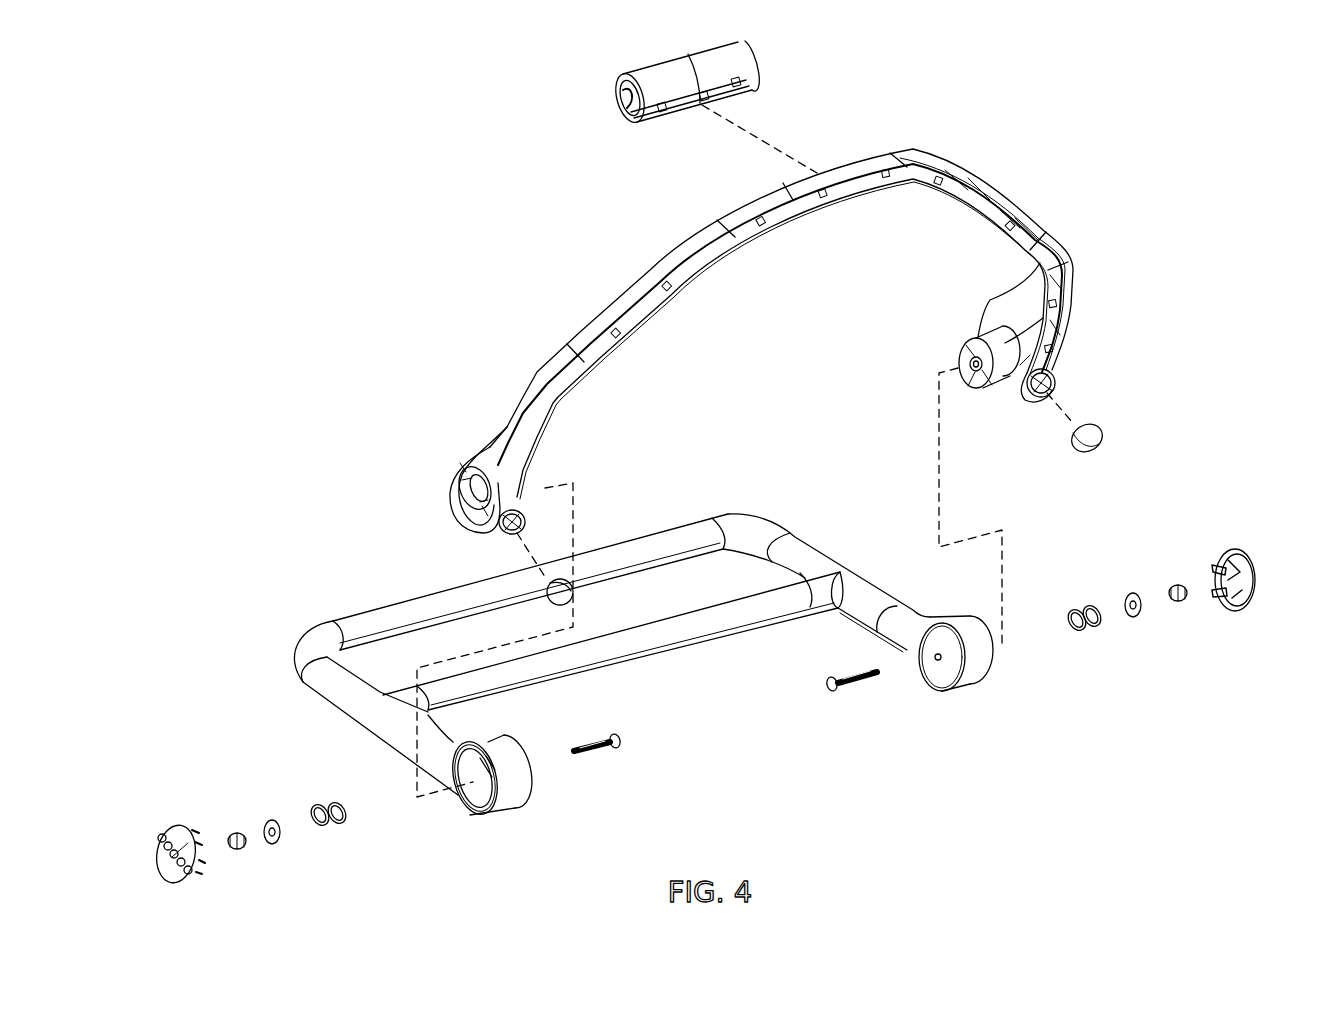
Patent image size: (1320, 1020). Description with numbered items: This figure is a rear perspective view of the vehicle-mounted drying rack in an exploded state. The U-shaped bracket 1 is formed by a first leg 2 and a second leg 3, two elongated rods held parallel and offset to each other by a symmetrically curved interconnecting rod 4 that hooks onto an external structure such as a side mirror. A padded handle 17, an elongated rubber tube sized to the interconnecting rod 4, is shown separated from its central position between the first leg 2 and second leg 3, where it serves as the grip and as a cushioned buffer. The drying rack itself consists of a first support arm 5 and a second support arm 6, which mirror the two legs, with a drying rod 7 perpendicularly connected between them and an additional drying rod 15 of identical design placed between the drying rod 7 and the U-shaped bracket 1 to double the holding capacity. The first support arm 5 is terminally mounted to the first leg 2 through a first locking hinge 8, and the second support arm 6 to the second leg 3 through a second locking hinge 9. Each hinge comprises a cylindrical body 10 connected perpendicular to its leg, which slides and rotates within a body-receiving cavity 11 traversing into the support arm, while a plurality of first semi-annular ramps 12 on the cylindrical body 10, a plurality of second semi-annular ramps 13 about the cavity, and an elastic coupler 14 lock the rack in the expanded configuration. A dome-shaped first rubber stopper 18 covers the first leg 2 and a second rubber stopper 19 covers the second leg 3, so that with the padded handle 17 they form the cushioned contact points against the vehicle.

The U-shaped bracket 1 is at (552, 286).
The first leg 2 is at (1030, 302).
The second leg 3 is at (497, 452).
The interconnecting rod 4 is at (706, 237).
The first support arm 5 is at (817, 562).
The second support arm 6 is at (352, 712).
The drying rod 7 is at (448, 598).
The first locking hinge 8 is at (916, 710).
The second locking hinge 9 is at (579, 797).
The cylindrical body 10 is at (1008, 385).
The body-receiving cavity 11 is at (476, 799).
The plurality of first semi-annular ramps 12 is at (975, 333).
The plurality of second semi-annular ramps 13 is at (487, 760).
The elastic coupler 14 is at (1083, 632).
The additional drying rod 15 is at (630, 650).
The padded handle 17 is at (622, 108).
The first rubber stopper 18 is at (1093, 445).
The second rubber stopper 19 is at (573, 596).